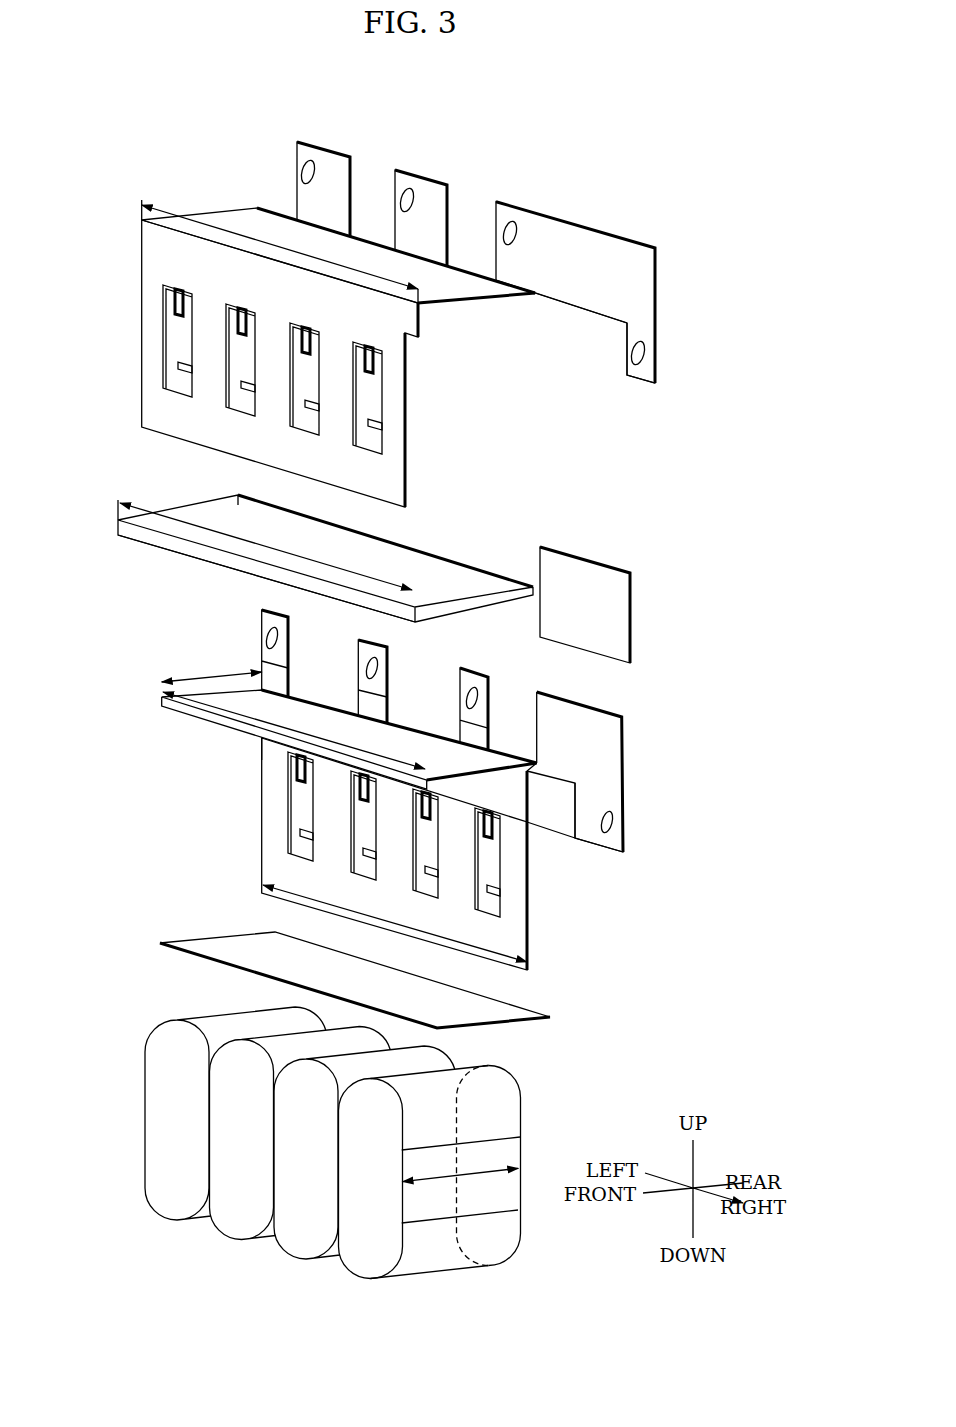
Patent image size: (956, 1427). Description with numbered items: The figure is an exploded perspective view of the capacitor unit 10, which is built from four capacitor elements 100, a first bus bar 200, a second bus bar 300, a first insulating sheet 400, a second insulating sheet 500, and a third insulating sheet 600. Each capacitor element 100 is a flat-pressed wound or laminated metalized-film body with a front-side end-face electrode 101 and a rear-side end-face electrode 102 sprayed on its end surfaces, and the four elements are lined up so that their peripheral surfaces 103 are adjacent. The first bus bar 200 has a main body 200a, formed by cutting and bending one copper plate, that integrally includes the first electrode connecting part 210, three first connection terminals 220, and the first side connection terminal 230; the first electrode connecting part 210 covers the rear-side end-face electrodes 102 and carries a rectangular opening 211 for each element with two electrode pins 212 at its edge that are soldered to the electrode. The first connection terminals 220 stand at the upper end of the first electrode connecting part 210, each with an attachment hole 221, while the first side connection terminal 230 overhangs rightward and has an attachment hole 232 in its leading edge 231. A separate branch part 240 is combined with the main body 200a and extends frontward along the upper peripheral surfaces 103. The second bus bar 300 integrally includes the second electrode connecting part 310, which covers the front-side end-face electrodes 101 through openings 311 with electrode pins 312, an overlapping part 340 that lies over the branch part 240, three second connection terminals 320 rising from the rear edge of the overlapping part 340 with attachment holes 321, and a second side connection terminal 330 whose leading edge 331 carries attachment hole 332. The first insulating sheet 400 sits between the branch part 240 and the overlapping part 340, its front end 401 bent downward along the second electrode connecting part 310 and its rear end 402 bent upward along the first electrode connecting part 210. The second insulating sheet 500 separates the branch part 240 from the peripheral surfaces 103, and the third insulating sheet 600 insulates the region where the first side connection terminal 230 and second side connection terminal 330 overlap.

The capacitor unit 10 is at (690, 227).
The capacitor element 100 is at (523, 1108).
The front-side end-face electrode 101 is at (366, 1256).
The rear-side end-face electrode 102 is at (510, 1197).
The peripheral surface 103 is at (453, 1260).
The first bus bar 200 is at (578, 840).
The main body 200a is at (260, 753).
The first electrode connecting part 210 is at (262, 880).
The opening 211 is at (350, 832).
The electrode pin 212 is at (358, 783).
The first connection terminal 220 is at (290, 647).
The attachment hole 221 is at (265, 640).
The first side connection terminal 230 is at (586, 730).
The leading edge 231 is at (623, 838).
The attachment hole 232 is at (603, 812).
The branch part 240 is at (177, 713).
The second bus bar 300 is at (412, 432).
The second electrode connecting part 310 is at (138, 337).
The opening 311 is at (162, 357).
The electrode pin 312 is at (158, 285).
The second connection terminal 320 is at (302, 206).
The attachment hole 321 is at (300, 168).
The second side connection terminal 330 is at (577, 297).
The leading edge 331 is at (658, 380).
The attachment hole 332 is at (627, 368).
The overlapping part 340 is at (225, 216).
The first insulating sheet 400 is at (173, 510).
The front end 401 is at (171, 547).
The rear end 402 is at (433, 545).
The second insulating sheet 500 is at (207, 957).
The third insulating sheet 600 is at (593, 562).